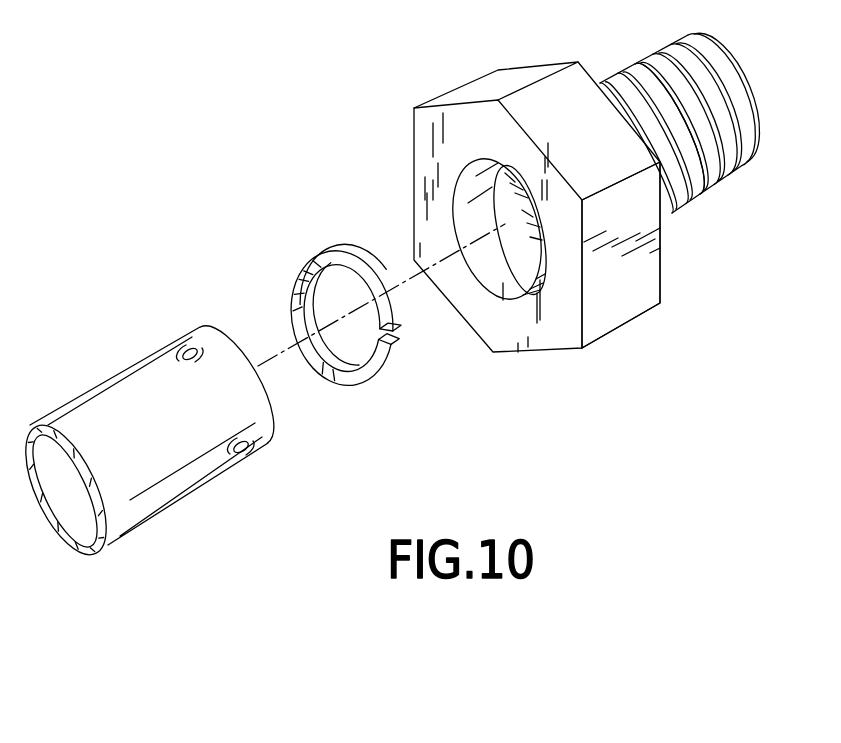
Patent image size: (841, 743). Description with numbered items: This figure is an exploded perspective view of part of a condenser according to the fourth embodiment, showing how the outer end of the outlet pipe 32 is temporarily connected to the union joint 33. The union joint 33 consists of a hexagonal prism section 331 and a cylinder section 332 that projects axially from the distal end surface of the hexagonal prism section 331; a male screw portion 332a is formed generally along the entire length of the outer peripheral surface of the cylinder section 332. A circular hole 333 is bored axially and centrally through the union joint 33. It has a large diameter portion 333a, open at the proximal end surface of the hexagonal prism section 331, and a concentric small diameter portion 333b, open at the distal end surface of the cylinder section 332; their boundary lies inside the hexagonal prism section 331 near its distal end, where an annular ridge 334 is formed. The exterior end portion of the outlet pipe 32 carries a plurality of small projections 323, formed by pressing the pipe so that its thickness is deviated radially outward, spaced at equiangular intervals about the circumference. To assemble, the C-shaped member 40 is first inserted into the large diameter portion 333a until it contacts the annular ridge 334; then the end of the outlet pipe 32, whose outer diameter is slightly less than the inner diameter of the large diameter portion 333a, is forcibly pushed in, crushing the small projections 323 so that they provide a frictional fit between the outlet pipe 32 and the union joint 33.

The outlet pipe 32 is at (110, 532).
The small projections 323 is at (186, 348).
The C-shaped member 40 is at (305, 260).
The union joint 33 is at (647, 313).
The hexagonal prism section 331 is at (600, 330).
The cylinder section 332 is at (737, 168).
The male screw portion 332a is at (658, 33).
The circular hole 333 is at (542, 281).
The large diameter portion 333a is at (505, 290).
The small diameter portion 333b is at (538, 220).
The annular ridge 334 is at (463, 180).